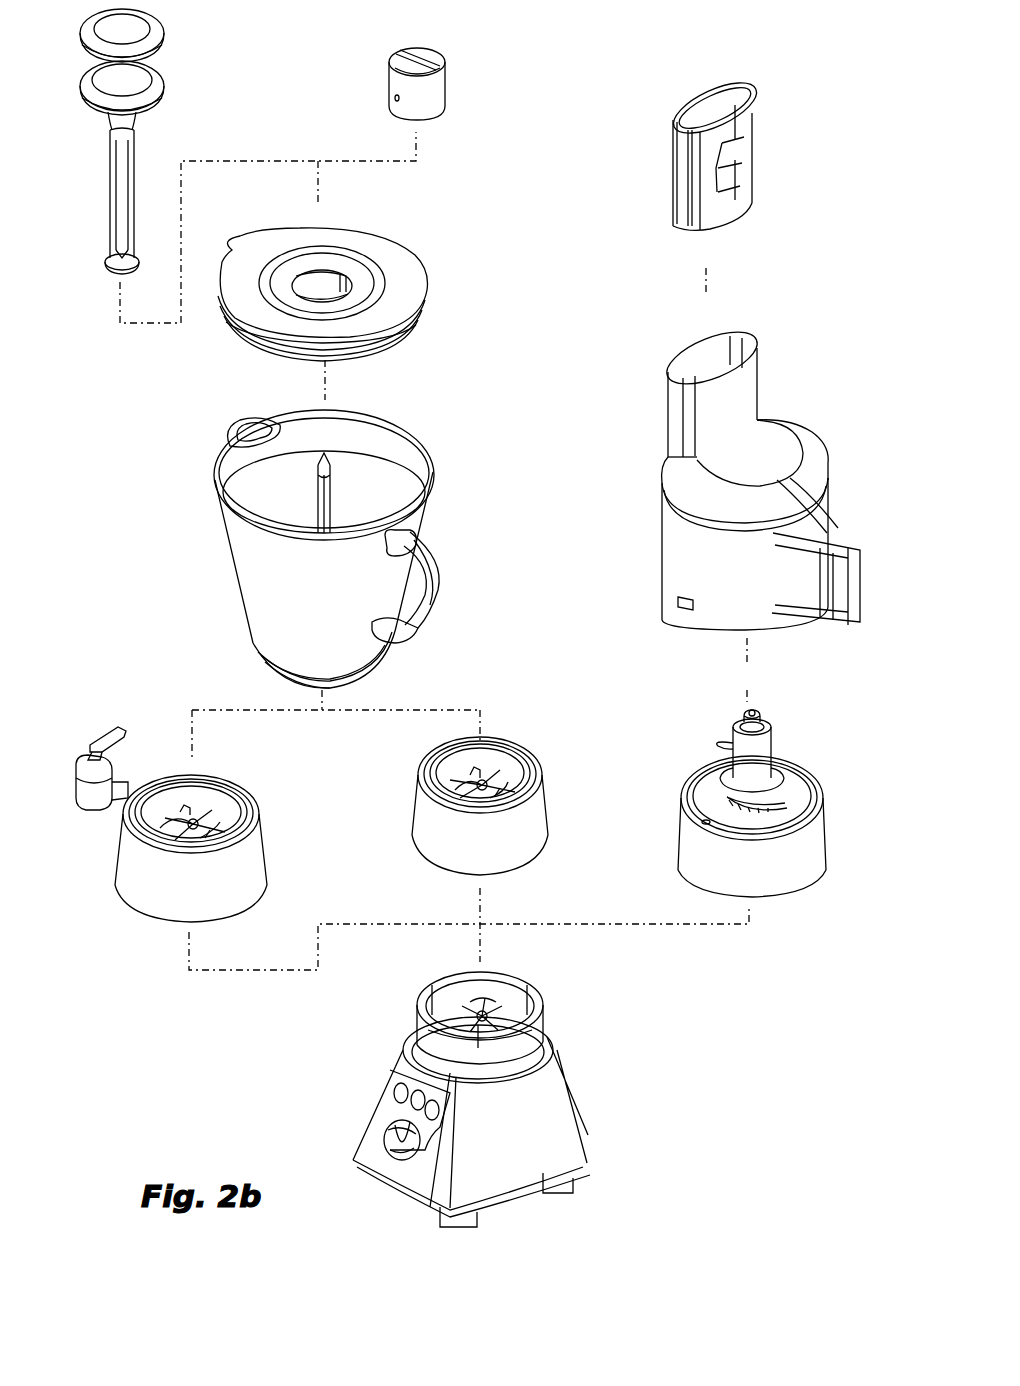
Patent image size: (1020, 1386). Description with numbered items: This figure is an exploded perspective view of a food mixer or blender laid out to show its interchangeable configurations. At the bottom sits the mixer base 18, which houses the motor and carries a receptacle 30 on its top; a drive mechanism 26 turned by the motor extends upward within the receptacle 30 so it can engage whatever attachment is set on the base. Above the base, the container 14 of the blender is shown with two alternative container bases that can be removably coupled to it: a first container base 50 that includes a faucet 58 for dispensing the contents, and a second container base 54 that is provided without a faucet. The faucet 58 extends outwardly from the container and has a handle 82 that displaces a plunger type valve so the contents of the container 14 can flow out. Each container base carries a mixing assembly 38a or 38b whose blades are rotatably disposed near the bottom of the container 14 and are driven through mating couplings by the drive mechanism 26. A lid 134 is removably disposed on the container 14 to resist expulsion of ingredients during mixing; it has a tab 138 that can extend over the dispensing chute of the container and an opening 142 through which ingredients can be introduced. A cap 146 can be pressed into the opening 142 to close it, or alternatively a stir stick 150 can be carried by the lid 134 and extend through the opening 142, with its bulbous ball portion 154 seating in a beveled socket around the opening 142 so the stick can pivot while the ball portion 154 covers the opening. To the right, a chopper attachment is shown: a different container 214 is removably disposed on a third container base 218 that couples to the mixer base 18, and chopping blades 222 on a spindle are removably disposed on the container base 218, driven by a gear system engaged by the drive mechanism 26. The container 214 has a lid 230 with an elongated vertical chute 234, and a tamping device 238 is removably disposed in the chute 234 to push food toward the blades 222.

The container 14 is at (262, 578).
The mixer base 18 is at (390, 1077).
The drive mechanism 26 is at (513, 978).
The receptacle 30 is at (417, 1003).
The mixing assembly 38a is at (200, 822).
The mixing assembly 38b is at (490, 780).
The first container base 50 is at (260, 826).
The second container base 54 is at (412, 787).
The faucet 58 is at (70, 790).
The handle 82 is at (100, 737).
The lid 134 is at (243, 333).
The tab 138 is at (226, 236).
The opening 142 is at (353, 287).
The cap 146 is at (392, 96).
The stir stick 150 is at (108, 158).
The ball portion 154 is at (168, 103).
The container 214 is at (660, 512).
The third container base 218 is at (818, 820).
The chopping blades 222 is at (733, 808).
The lid 230 is at (785, 443).
The chute 234 is at (667, 398).
The tamping device 238 is at (672, 148).